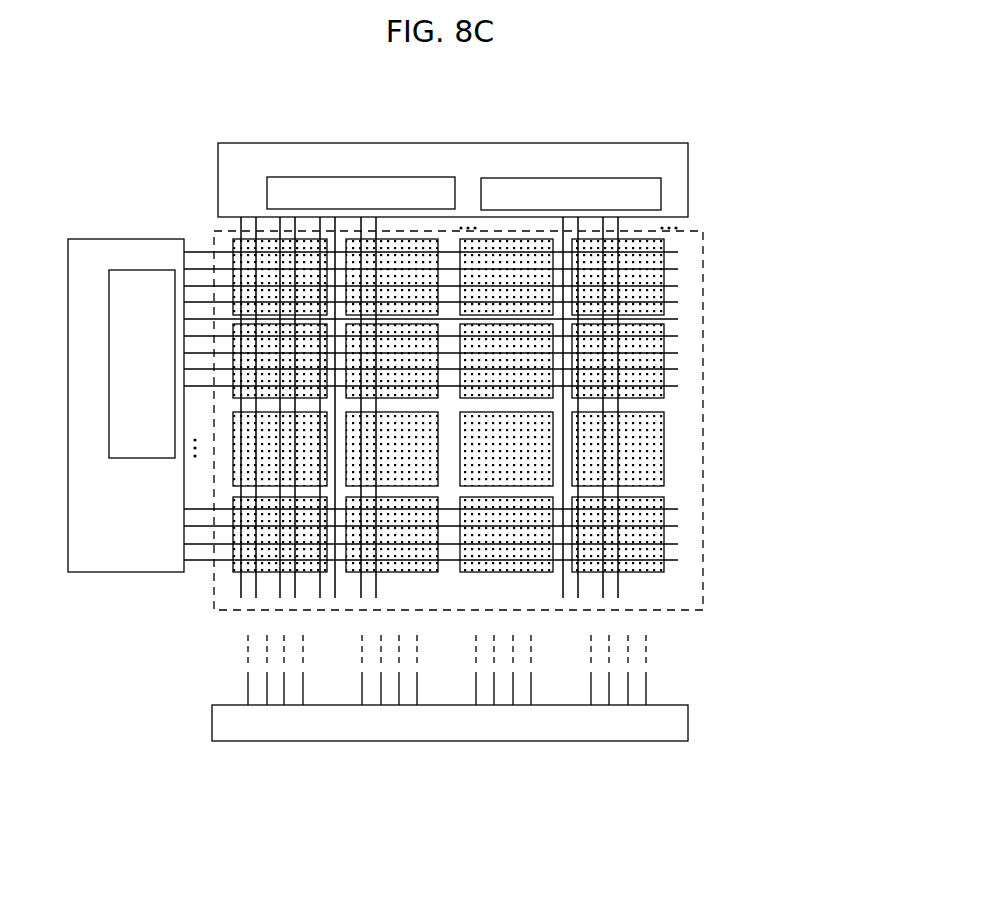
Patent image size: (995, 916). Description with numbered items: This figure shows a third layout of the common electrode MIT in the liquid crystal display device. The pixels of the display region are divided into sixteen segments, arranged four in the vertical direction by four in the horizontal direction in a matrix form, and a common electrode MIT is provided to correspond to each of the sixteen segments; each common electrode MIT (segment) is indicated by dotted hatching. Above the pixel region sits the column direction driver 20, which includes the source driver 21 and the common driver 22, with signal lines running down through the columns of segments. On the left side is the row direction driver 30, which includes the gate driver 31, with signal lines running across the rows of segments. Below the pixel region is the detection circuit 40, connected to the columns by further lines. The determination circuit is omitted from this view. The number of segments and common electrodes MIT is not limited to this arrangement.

The column direction driver 20 is at (258, 143).
The source driver 21 is at (413, 177).
The common driver 22 is at (575, 178).
The row direction driver 30 is at (68, 502).
The gate driver 31 is at (109, 378).
The detection circuit 40 is at (667, 705).
The common electrode MIT is at (520, 452).